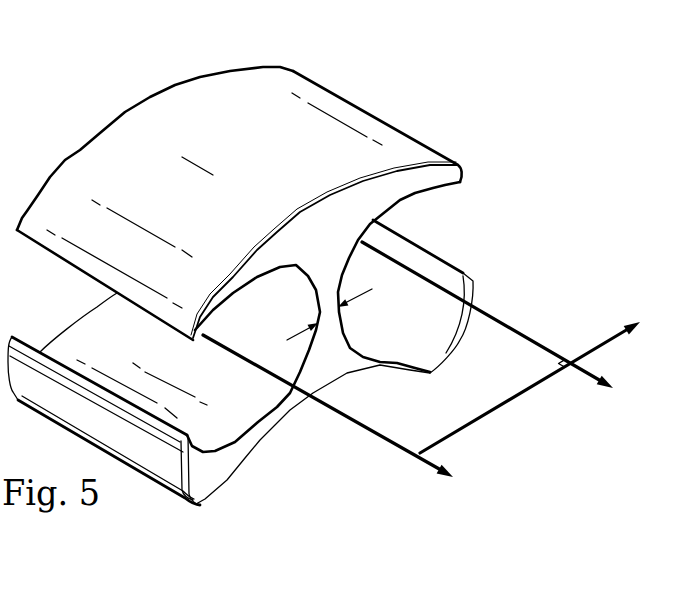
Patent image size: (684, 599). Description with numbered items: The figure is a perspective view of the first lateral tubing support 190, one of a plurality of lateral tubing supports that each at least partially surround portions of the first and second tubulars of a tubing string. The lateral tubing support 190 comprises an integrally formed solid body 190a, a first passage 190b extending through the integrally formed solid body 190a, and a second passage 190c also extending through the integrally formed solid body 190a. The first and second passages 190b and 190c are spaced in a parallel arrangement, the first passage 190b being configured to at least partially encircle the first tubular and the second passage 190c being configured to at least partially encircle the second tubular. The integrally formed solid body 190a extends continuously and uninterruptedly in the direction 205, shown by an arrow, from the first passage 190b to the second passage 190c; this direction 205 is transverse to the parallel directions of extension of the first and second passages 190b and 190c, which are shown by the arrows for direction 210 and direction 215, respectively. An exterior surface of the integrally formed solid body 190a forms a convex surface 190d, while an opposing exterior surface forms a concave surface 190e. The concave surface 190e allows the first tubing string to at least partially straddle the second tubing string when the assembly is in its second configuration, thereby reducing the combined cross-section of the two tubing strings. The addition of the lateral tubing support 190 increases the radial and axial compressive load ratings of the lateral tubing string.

The first lateral tubing support 190 is at (90, 82).
The integrally formed solid body 190a is at (313, 222).
The first passage 190b is at (370, 342).
The second passage 190c is at (204, 436).
The convex surface 190d is at (345, 110).
The concave surface 190e is at (291, 406).
The direction 205 is at (600, 347).
The direction 210 is at (500, 327).
The direction 215 is at (268, 371).